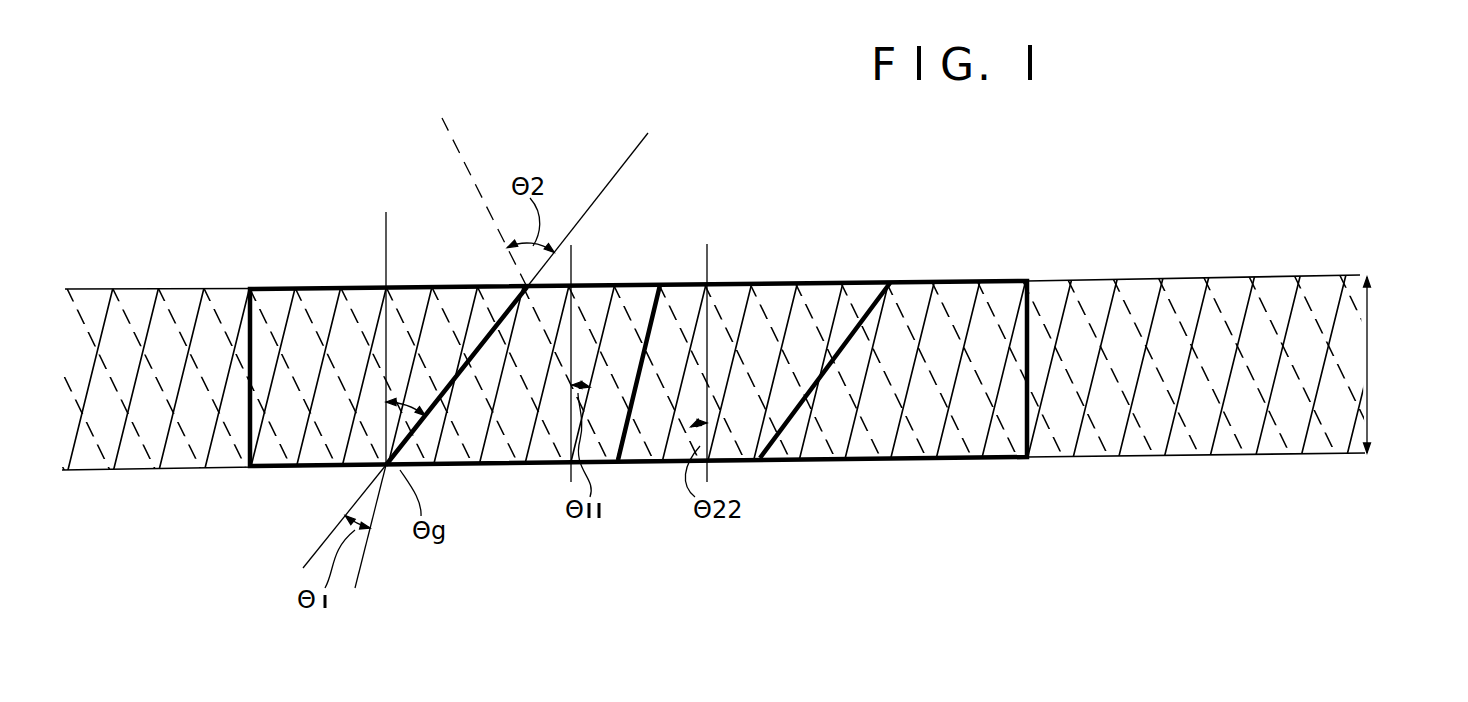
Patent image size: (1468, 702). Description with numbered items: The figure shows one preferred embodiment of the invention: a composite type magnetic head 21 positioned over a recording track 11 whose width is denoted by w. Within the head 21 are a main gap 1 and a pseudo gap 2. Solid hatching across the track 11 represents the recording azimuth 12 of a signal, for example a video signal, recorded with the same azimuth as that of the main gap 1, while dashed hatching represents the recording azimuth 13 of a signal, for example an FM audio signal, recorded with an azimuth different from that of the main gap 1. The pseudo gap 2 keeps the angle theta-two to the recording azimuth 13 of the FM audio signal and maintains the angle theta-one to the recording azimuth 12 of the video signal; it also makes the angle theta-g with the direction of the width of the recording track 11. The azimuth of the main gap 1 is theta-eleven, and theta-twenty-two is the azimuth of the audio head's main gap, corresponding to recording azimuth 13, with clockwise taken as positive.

The main gap 1 is at (640, 359).
The pseudo gap 2 is at (430, 412).
The recording track 11 is at (722, 356).
The recording azimuth of a video signal 12 is at (1158, 307).
The recording azimuth of an FM audio signal 13 is at (1400, 262).
The composite type magnetic head 21 is at (1003, 281).